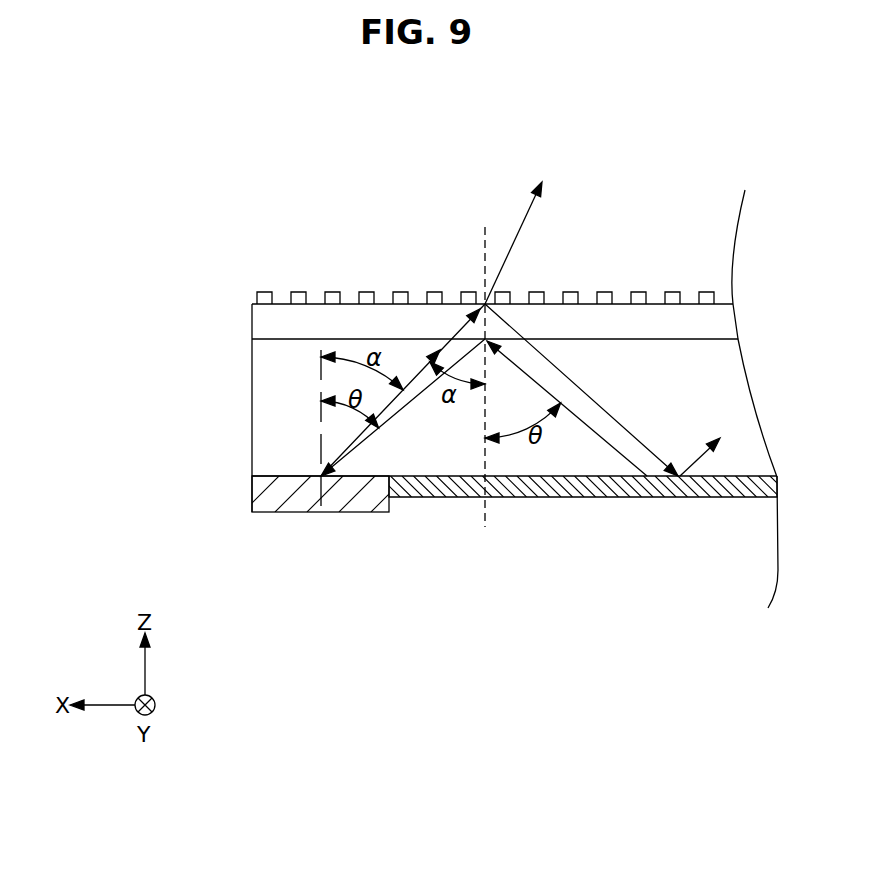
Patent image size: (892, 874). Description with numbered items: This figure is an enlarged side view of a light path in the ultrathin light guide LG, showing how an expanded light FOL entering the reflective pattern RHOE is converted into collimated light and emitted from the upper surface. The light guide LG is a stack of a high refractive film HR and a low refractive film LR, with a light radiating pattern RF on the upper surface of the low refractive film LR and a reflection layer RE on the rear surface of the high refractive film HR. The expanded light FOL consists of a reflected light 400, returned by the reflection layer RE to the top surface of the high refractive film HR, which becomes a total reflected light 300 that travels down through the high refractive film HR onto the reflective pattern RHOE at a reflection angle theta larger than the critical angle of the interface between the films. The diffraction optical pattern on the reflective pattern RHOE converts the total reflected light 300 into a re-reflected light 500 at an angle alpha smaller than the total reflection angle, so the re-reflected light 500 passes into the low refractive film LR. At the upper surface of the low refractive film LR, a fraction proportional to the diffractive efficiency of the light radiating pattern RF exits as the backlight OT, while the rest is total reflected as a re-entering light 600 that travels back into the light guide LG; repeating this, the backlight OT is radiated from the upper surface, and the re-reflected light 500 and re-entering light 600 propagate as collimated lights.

The total reflected light 300 is at (397, 413).
The reflected light 400 is at (604, 440).
The re-reflected light 500 is at (425, 367).
The re-entering light 600 is at (567, 377).
The light guide LG is at (143, 272).
The light radiating pattern RF is at (257, 293).
The low refractive film LR is at (277, 328).
The high refractive film HR is at (277, 402).
The reflective pattern RHOE is at (272, 502).
The reflection layer RE is at (693, 490).
The expanded light FOL is at (592, 578).
The backlight OT is at (519, 231).